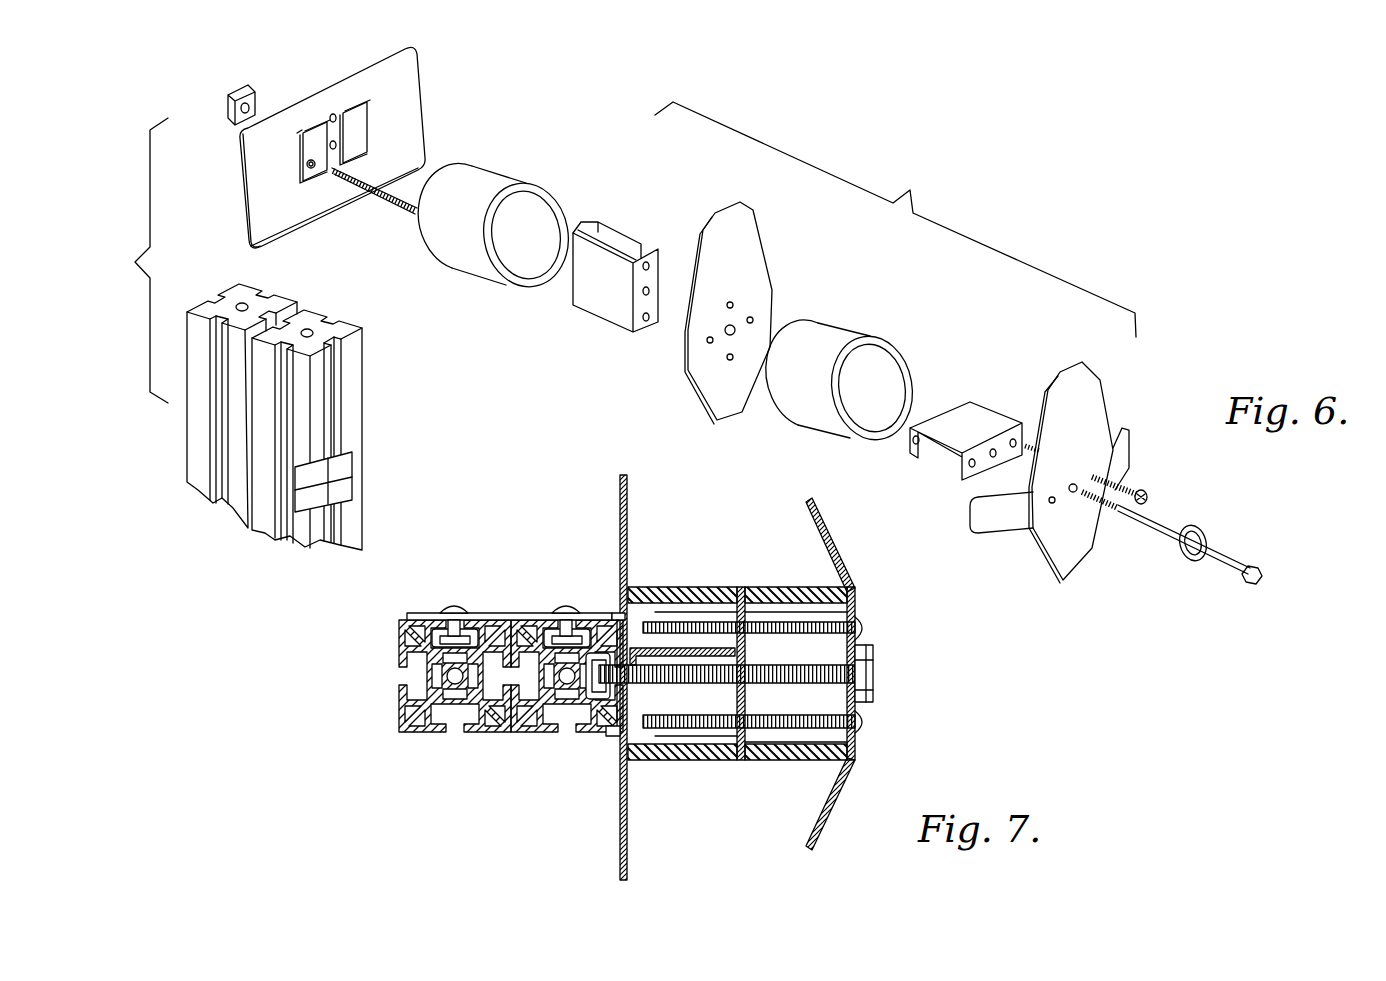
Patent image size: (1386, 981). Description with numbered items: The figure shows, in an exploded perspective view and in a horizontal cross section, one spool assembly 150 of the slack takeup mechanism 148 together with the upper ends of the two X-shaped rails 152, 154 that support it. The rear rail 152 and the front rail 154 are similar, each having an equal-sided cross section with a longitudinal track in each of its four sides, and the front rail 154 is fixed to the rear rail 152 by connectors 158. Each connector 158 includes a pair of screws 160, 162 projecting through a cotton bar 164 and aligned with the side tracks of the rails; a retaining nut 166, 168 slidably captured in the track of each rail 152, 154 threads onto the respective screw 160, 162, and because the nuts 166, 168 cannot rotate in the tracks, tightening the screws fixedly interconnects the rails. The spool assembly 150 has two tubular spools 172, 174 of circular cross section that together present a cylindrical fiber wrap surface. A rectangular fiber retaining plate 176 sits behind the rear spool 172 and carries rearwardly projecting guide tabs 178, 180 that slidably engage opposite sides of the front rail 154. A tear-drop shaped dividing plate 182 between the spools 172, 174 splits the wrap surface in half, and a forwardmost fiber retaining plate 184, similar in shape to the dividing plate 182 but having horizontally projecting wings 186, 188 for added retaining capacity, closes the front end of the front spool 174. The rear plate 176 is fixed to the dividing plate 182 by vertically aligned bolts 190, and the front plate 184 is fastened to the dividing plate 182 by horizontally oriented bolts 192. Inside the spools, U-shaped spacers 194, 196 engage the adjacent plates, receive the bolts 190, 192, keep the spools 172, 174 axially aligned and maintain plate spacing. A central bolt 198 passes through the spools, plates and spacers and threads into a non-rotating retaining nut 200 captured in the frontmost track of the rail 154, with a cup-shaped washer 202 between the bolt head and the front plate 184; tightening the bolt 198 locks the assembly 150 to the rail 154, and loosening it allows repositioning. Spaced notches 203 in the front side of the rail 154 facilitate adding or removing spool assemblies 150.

In FIG. 6, the slack takeup mechanism 148 is at (130, 260).
In FIG. 7, the slack takeup mechanism 148 is at (585, 744).
In FIG. 6, the spool assembly 150 is at (895, 219).
In FIG. 7, the spool assembly 150 is at (836, 548).
In FIG. 6, the rear X-shaped rail 152 is at (255, 288).
In FIG. 7, the rear X-shaped rail 152 is at (410, 728).
In FIG. 6, the front X-shaped rail 154 is at (364, 333).
In FIG. 7, the front X-shaped rail 154 is at (515, 730).
In FIG. 7, the connector 158 is at (440, 615).
In FIG. 7, the screw 160 is at (453, 600).
In FIG. 7, the screw 162 is at (560, 600).
In FIG. 7, the cotton bar 164 is at (505, 613).
In FIG. 7, the retaining nut 166 is at (440, 645).
In FIG. 7, the retaining nut 168 is at (555, 640).
In FIG. 6, the rear spool 172 is at (505, 170).
In FIG. 6, the front spool 174 is at (855, 345).
In FIG. 6, the fiber retaining plate 176 is at (418, 58).
In FIG. 7, the fiber retaining plate 176 is at (630, 480).
In FIG. 6, the guide tab 178 is at (297, 133).
In FIG. 7, the guide tab 178 is at (612, 738).
In FIG. 7, the guide tab 180 is at (598, 613).
In FIG. 6, the dividing plate 182 is at (748, 244).
In FIG. 7, the dividing plate 182 is at (740, 587).
In FIG. 6, the forwardmost fiber retaining plate 184 is at (1085, 380).
In FIG. 7, the forwardmost fiber retaining plate 184 is at (855, 590).
In FIG. 6, the wing 186 is at (1005, 522).
In FIG. 7, the wing 186 is at (832, 815).
In FIG. 6, the wing 188 is at (1125, 452).
In FIG. 7, the wing 188 is at (820, 522).
In FIG. 6, the bolt 190 is at (392, 202).
In FIG. 6, the bolt 192 is at (1146, 490).
In FIG. 7, the bolt 192 is at (866, 622).
In FIG. 6, the U-shaped spacer 194 is at (600, 312).
In FIG. 7, the U-shaped spacer 194 is at (638, 648).
In FIG. 6, the U-shaped spacer 196 is at (963, 408).
In FIG. 7, the U-shaped spacer 196 is at (793, 618).
In FIG. 6, the central bolt 198 is at (1148, 530).
In FIG. 7, the central bolt 198 is at (820, 684).
In FIG. 6, the retaining nut 200 is at (228, 92).
In FIG. 7, the retaining nut 200 is at (598, 690).
In FIG. 6, the cup-shaped washer 202 is at (1198, 537).
In FIG. 7, the cup-shaped washer 202 is at (876, 655).
In FIG. 6, the notch 203 is at (354, 472).